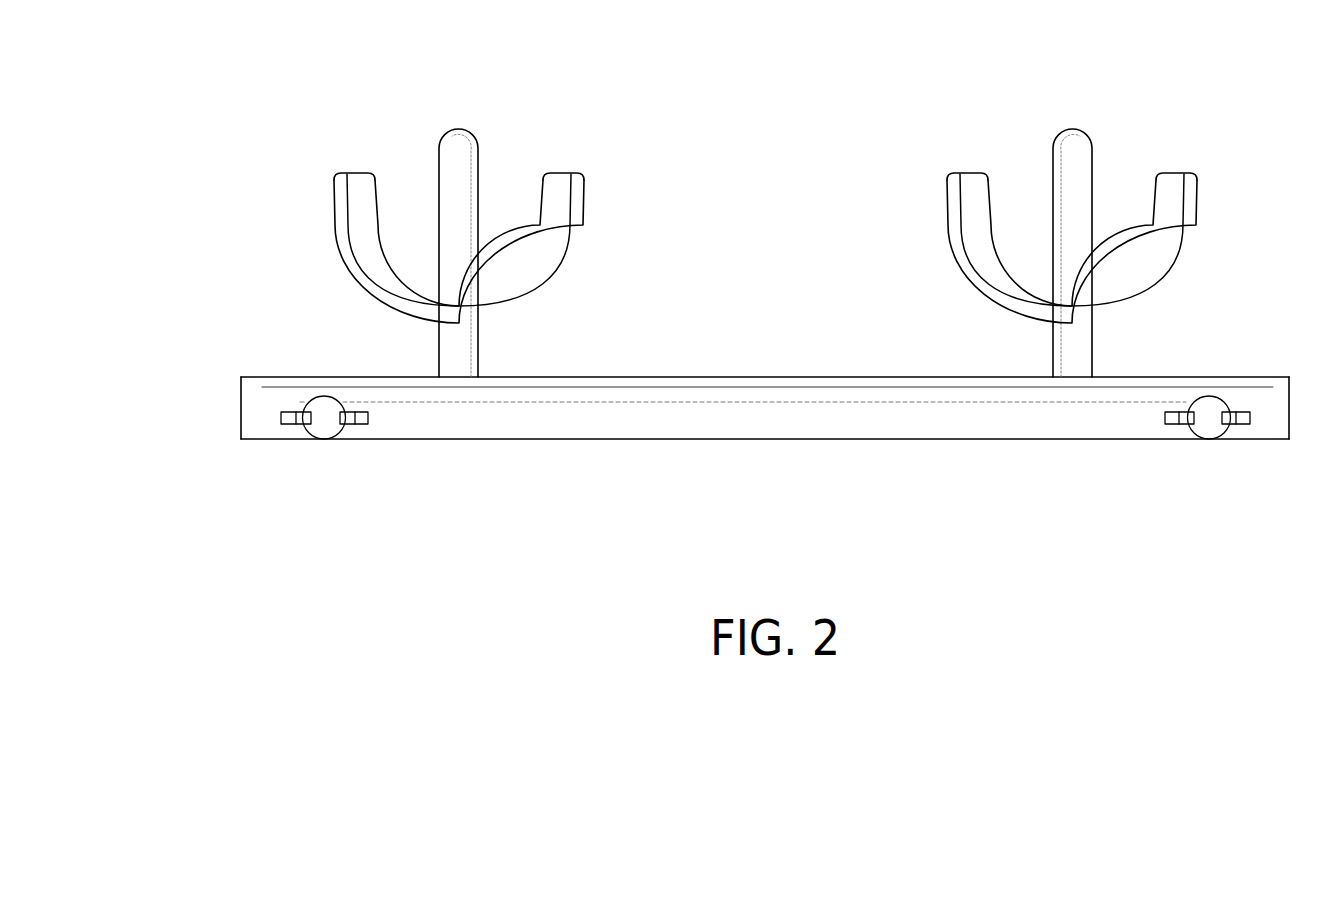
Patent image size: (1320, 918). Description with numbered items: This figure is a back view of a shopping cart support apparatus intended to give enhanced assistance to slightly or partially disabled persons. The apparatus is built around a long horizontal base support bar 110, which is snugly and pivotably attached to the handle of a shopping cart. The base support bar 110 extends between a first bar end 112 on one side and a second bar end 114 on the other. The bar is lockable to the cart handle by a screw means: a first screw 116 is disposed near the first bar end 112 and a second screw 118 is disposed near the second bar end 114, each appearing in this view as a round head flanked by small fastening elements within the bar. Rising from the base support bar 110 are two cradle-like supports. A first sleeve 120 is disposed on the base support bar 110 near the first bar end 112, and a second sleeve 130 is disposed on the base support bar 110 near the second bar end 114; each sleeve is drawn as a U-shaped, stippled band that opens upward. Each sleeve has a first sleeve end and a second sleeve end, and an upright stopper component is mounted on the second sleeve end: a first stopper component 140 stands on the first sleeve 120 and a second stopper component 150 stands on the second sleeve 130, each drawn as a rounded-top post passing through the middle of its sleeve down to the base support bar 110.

The base support bar 110 is at (725, 393).
The first bar end 112 is at (1276, 412).
The second bar end 114 is at (252, 409).
The first screw 116 is at (1209, 425).
The second screw 118 is at (324, 440).
The first sleeve 120 is at (960, 205).
The second sleeve 130 is at (340, 228).
The first stopper component 140 is at (1073, 148).
The second stopper component 150 is at (456, 150).